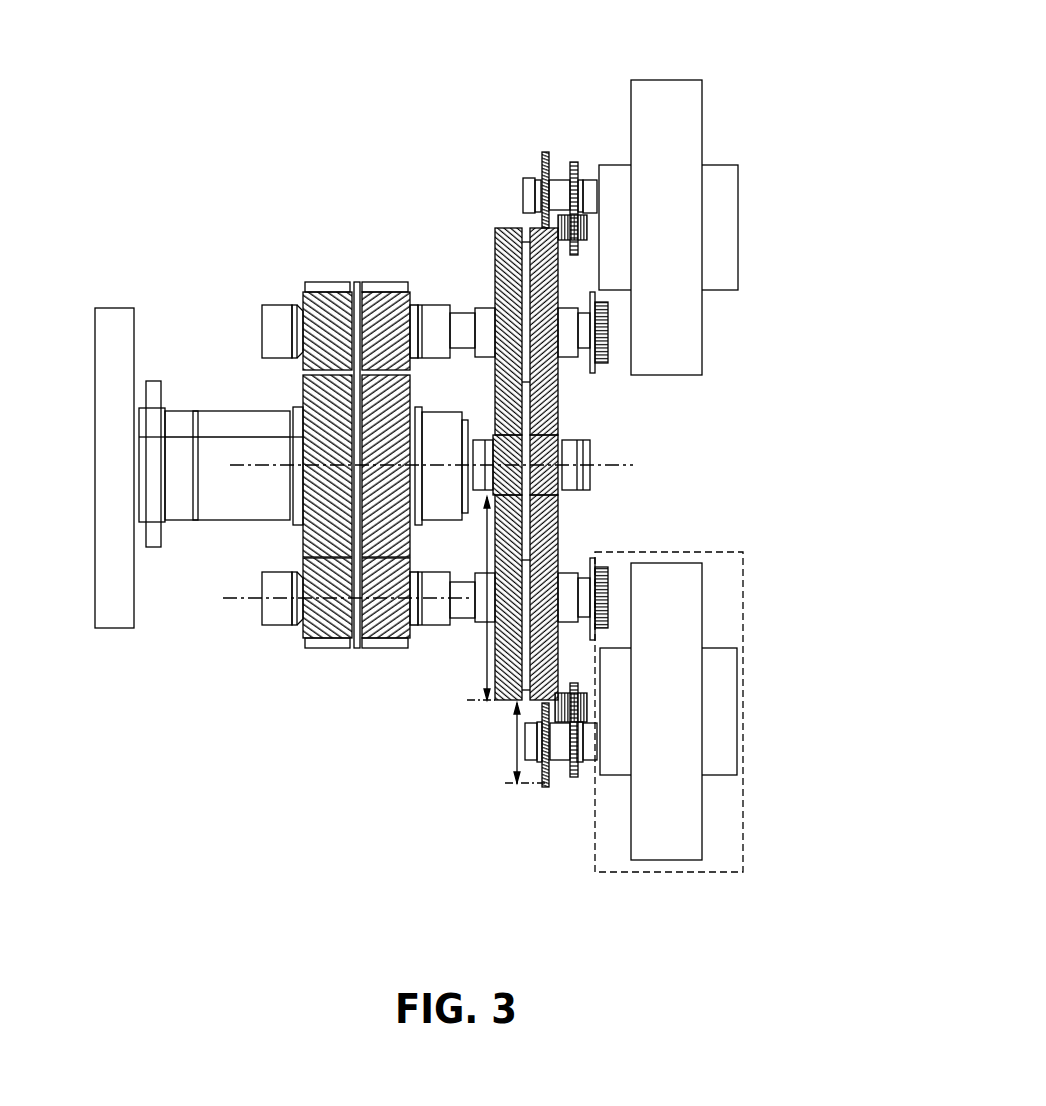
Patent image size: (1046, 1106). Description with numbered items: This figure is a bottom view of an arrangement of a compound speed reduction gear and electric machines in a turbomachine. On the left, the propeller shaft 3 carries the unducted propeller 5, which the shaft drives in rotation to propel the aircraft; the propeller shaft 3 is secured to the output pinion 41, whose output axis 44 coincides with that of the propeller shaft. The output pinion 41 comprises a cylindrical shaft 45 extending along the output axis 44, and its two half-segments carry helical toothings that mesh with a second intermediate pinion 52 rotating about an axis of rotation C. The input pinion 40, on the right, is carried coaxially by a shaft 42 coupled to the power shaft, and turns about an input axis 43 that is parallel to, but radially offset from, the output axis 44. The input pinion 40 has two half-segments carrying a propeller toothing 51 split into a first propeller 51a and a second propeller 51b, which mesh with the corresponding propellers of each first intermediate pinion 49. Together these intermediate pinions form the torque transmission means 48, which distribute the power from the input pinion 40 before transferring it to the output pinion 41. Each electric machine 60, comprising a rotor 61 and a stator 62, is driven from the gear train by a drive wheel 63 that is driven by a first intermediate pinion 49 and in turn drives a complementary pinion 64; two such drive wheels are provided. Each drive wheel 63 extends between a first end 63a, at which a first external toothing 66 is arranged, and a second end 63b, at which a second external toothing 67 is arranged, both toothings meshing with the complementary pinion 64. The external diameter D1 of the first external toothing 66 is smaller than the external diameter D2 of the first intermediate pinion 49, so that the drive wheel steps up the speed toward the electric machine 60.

The propeller shaft 3 is at (228, 520).
The unducted propeller 5 is at (112, 308).
The input pinion 40 is at (557, 480).
The output pinion 41 is at (333, 388).
The shaft 42 is at (587, 483).
The input axis 43 is at (633, 465).
The output axis 44 is at (283, 468).
The cylindrical shaft 45 is at (297, 412).
The torque transmission means 48 is at (407, 268).
The first intermediate pinion 49 is at (563, 358).
The large helical gear 51 is at (535, 448).
The first propeller 51a is at (526, 331).
The second propeller 51b is at (558, 503).
The second intermediate pinion 52 is at (277, 312).
The electric machine 60 is at (743, 128).
The rotor 61 is at (727, 205).
The stator 62 is at (693, 337).
The drive wheel 63 is at (562, 178).
The first end 63a is at (523, 192).
The second end 63b is at (595, 180).
The complementary pinion 64 is at (527, 743).
The first external toothing 66 is at (542, 167).
The second external toothing 67 is at (573, 162).
The axis of rotation C is at (247, 600).
The external diameter D1 is at (517, 745).
The external diameter D2 is at (405, 585).